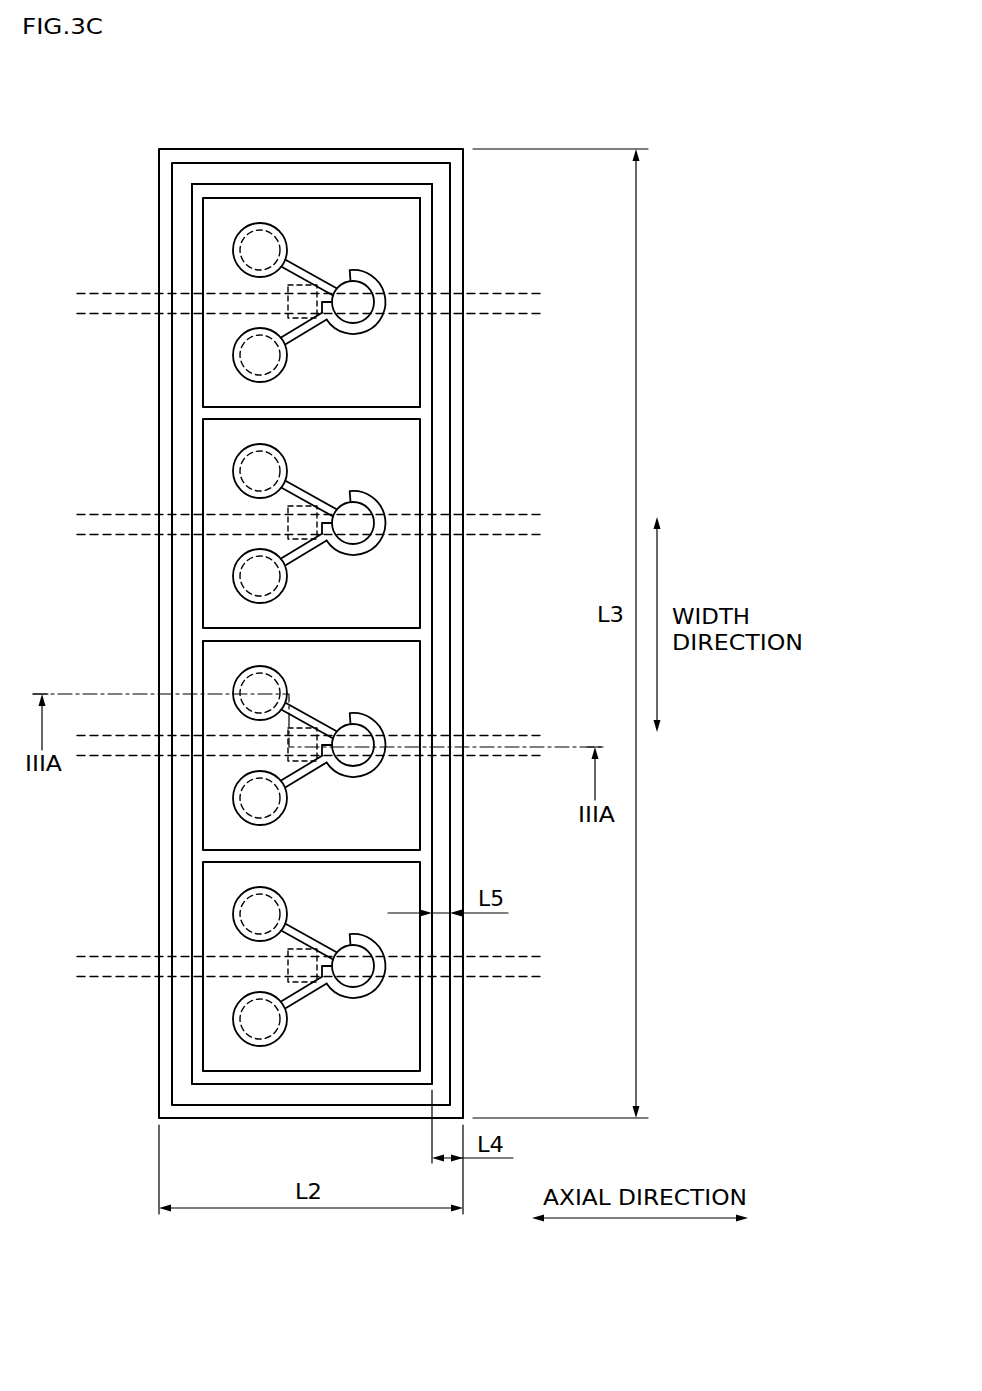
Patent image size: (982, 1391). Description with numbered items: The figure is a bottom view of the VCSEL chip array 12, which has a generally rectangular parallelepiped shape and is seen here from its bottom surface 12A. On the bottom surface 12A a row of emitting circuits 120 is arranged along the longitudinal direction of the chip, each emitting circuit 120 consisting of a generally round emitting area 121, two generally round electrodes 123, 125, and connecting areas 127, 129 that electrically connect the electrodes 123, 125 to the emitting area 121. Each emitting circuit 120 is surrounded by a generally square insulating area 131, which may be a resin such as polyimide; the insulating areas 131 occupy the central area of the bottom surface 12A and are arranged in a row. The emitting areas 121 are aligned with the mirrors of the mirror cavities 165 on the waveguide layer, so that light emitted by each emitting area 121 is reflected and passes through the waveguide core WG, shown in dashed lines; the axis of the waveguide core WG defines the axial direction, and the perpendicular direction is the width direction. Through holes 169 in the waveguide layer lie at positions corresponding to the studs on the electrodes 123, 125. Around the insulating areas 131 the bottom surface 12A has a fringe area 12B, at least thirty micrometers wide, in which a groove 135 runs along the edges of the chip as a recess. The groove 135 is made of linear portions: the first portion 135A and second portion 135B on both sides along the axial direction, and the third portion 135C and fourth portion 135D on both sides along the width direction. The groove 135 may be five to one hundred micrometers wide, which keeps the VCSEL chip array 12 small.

The VCSEL chip array 12 is at (464, 124).
The bottom surface 12A is at (403, 476).
The fringe area 12B is at (458, 1057).
The emitting circuit 120 is at (212, 212).
The emitting area 121 is at (373, 273).
The electrode 123 is at (233, 263).
The electrode 125 is at (257, 383).
The connecting area 127 is at (308, 266).
The connecting area 129 is at (322, 323).
The insulating area 131 is at (410, 331).
The groove 135 is at (328, 174).
The first portion 135A is at (222, 172).
The second portion 135B is at (257, 1095).
The third portion 135C is at (185, 870).
The fourth portion 135D is at (440, 833).
The mirror cavity 165 is at (313, 320).
The through hole 169 is at (237, 352).
The waveguide core WG is at (513, 291).